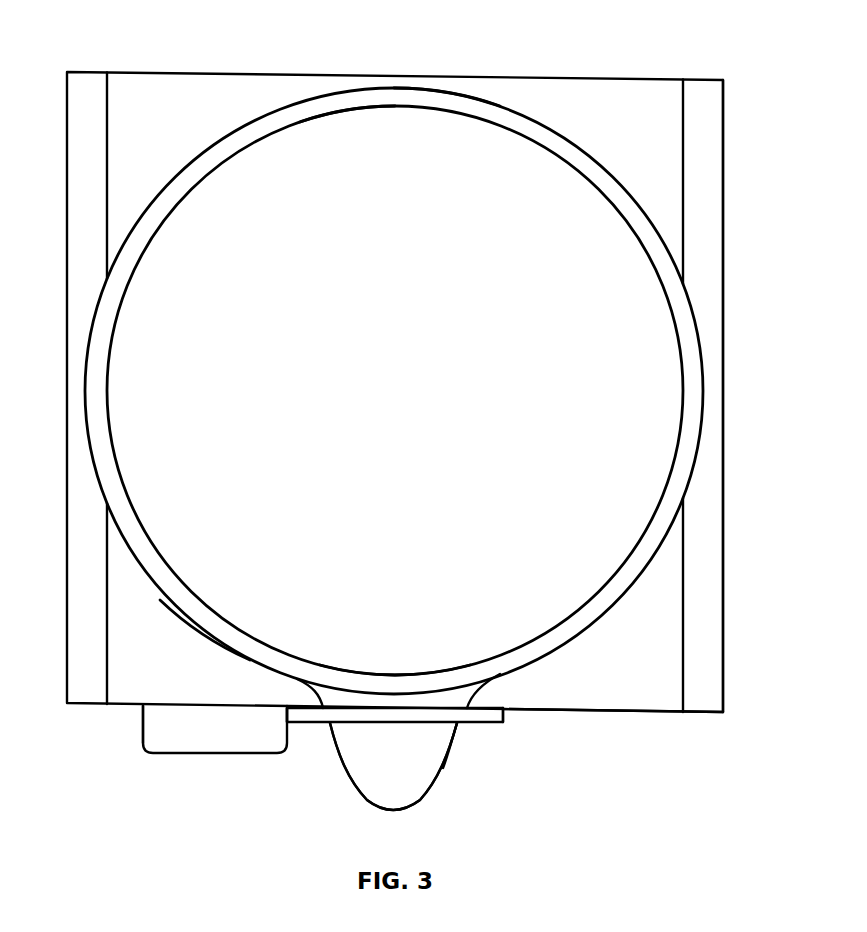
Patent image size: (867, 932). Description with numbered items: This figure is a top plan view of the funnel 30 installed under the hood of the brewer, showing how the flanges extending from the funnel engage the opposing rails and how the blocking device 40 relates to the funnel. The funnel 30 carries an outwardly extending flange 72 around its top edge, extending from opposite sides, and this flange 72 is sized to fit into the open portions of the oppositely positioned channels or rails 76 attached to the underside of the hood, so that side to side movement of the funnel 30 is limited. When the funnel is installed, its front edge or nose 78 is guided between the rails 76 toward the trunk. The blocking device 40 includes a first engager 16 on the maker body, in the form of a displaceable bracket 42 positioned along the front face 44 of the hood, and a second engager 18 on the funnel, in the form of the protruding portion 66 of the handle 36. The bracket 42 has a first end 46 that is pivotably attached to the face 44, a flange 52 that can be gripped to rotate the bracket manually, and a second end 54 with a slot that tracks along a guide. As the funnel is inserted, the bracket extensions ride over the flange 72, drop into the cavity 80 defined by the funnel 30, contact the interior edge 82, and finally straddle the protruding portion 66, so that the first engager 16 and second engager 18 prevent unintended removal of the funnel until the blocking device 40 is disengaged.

The first engager 16 is at (302, 702).
The second engager 18 is at (449, 763).
The funnel 30 is at (197, 642).
The handle 36 is at (435, 779).
The blocking device 40 is at (288, 762).
The displaceable bracket 42 is at (305, 724).
The front face 44 is at (632, 715).
The first end 46 is at (139, 726).
The flange 52 is at (208, 742).
The second end 54 is at (499, 724).
The protruding portion 66 is at (452, 743).
The outwardly extending flange 72 is at (395, 97).
The rails 76 is at (700, 702).
The nose 78 is at (430, 90).
The cavity 80 is at (375, 125).
The interior edge 82 is at (393, 672).